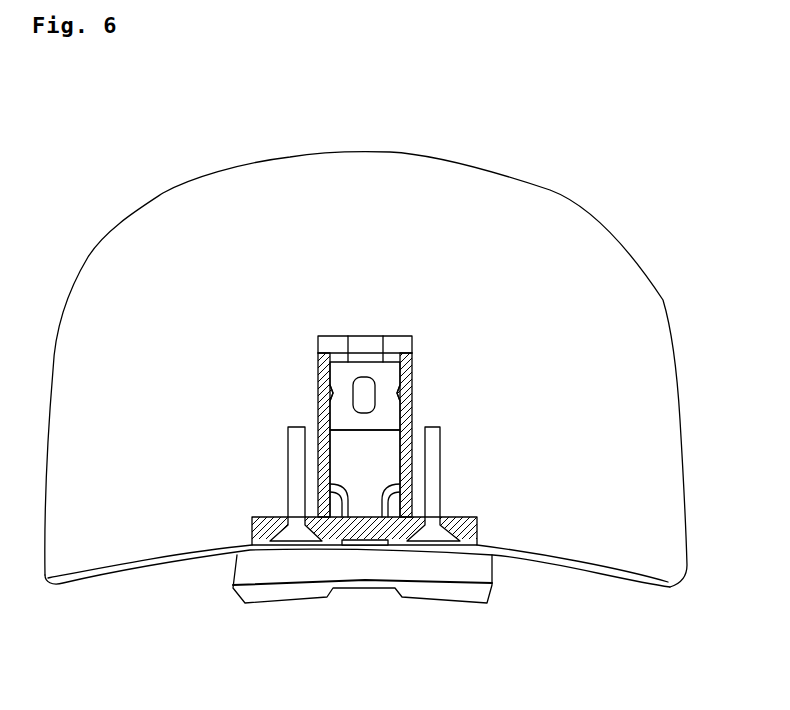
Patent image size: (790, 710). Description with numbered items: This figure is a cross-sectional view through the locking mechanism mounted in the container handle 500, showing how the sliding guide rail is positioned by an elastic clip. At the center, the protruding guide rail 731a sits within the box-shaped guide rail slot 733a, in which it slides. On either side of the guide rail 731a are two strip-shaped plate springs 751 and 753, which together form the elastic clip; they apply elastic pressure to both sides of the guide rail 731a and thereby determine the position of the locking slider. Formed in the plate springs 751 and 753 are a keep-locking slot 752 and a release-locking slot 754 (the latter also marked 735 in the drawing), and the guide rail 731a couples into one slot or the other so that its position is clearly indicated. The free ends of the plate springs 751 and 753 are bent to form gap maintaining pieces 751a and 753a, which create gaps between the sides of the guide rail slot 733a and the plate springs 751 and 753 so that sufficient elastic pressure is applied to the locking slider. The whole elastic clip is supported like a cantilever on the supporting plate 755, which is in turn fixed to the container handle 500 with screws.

The container handle 500 is at (604, 255).
The guide rail 731a is at (343, 370).
The guide rail slot 733a is at (345, 445).
The plate spring 751 is at (288, 462).
The gap maintaining piece 751a is at (318, 353).
The plate spring 753 is at (410, 462).
The gap maintaining piece 753a is at (412, 355).
The release-locking slot 754 is at (358, 387).
The locking groove 735 is at (330, 392).
The keep-locking slot 752 is at (345, 520).
The supporting plate 755 is at (363, 533).